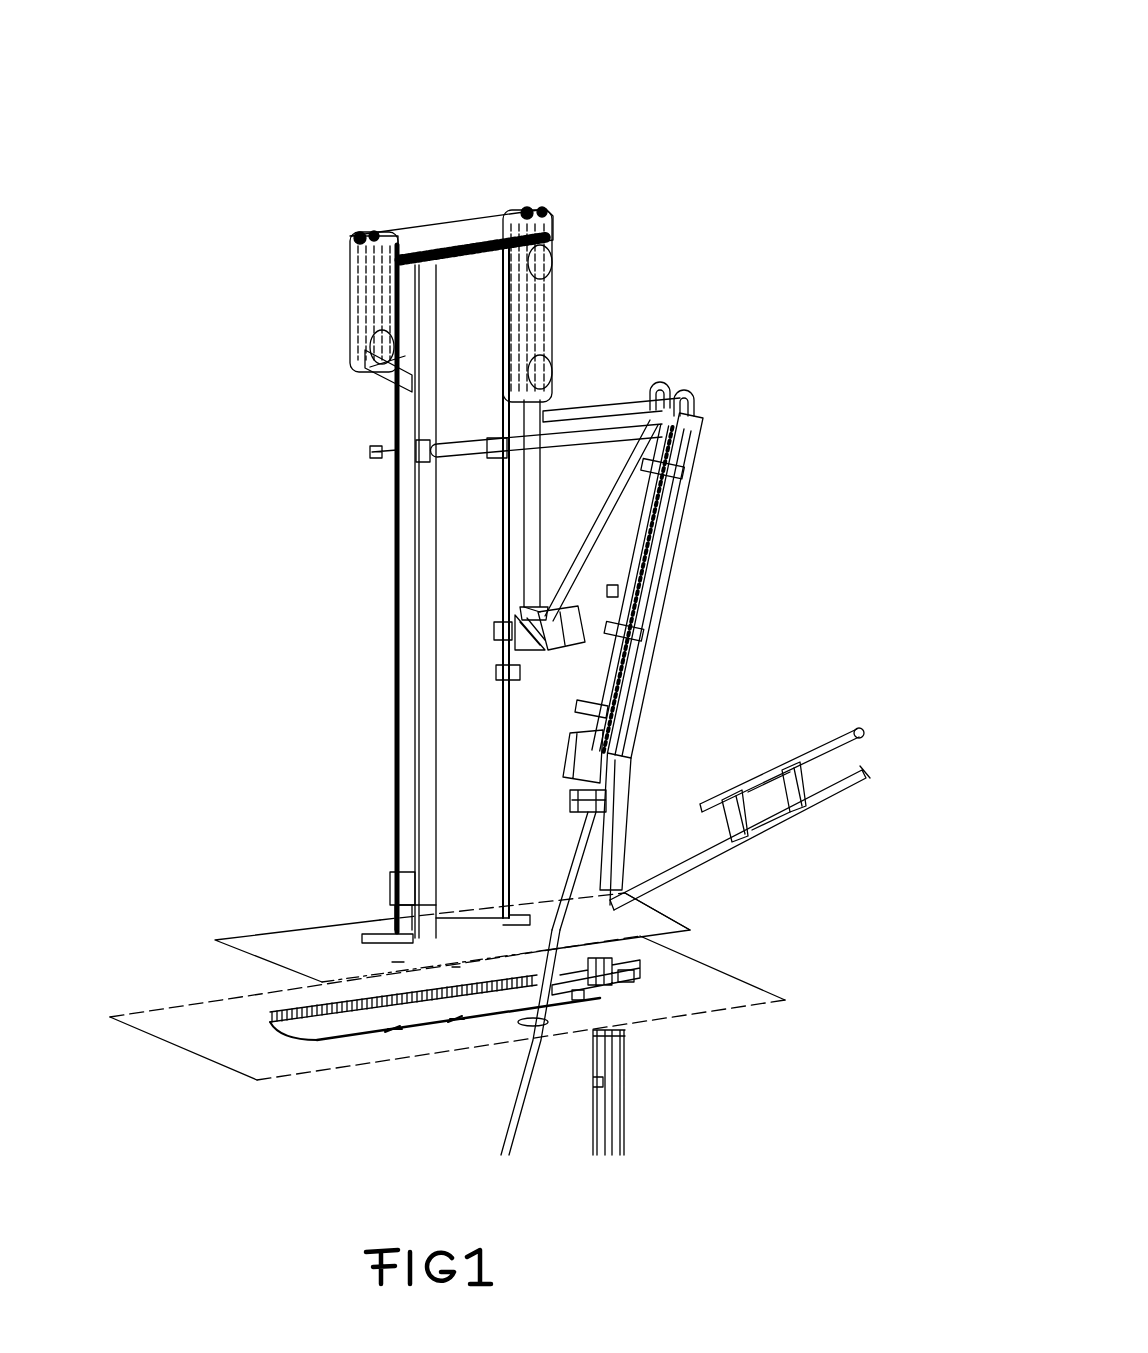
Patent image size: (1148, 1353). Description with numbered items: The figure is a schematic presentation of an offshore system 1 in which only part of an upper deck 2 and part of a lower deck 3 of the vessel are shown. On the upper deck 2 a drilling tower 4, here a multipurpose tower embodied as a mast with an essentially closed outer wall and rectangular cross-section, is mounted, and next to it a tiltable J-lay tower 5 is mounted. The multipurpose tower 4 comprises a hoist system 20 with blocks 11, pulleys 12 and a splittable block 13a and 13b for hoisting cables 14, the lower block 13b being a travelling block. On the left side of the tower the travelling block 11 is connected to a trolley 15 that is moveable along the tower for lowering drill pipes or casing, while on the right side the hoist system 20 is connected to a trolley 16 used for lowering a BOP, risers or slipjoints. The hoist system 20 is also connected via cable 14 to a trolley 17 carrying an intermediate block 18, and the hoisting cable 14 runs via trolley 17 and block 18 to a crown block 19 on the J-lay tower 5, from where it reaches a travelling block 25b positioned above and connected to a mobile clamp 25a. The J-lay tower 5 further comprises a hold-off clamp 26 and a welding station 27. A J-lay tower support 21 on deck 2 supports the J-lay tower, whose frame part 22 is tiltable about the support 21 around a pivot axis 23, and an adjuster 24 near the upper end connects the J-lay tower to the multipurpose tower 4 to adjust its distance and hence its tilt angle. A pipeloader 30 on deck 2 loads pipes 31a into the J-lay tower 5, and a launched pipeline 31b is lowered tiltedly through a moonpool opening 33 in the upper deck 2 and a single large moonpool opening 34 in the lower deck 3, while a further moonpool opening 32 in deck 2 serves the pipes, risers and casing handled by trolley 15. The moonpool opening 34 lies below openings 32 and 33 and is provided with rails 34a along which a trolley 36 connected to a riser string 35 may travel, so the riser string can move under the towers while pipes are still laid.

The offshore system 1 is at (670, 90).
The upper deck 2 is at (452, 937).
The lower deck 3 is at (447, 1008).
The drilling tower 4 is at (470, 773).
The J-lay tower 5 is at (706, 441).
The block 11 is at (372, 346).
The pulleys 12 is at (373, 234).
The splittable block 13a is at (552, 260).
The splittable block 13b is at (554, 370).
The hoisting cable 14 is at (553, 306).
The trolley 15 is at (392, 384).
The trolley 16 is at (506, 408).
The trolley 17 is at (495, 666).
The intermediate block 18 is at (554, 642).
The crown block 19 is at (696, 393).
The hoist system 20 is at (328, 243).
The J-lay tower support 21 is at (650, 895).
The frame part 22 is at (640, 830).
The pivot axis 23 is at (571, 886).
The adjuster 24 is at (627, 400).
The mobile clamp 25a is at (652, 553).
The travelling block 25b is at (652, 540).
The hold-off clamp 26 is at (640, 793).
The welding station 27 is at (645, 750).
The pipeloader 30 is at (826, 800).
The pipes 31a is at (851, 728).
The launched pipeline 31b is at (512, 1103).
The moonpool opening 32 is at (380, 934).
The moonpool opening 33 is at (690, 932).
The moonpool opening 34 is at (336, 1025).
The rails 34a is at (274, 1022).
The riser string 35 is at (626, 1077).
The trolley 36 is at (586, 992).